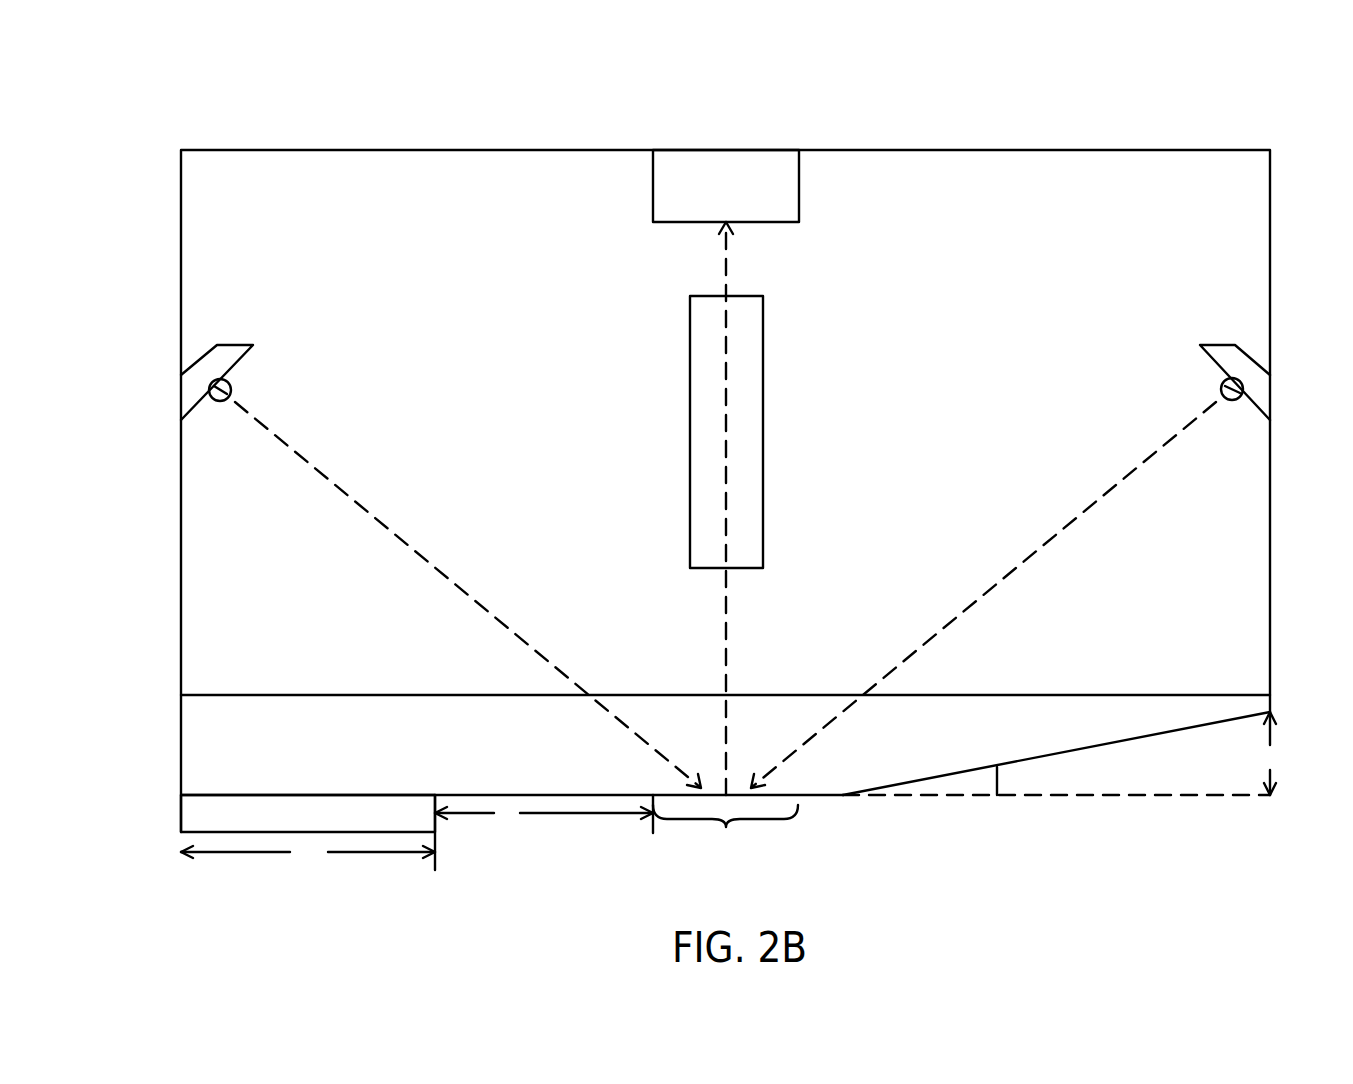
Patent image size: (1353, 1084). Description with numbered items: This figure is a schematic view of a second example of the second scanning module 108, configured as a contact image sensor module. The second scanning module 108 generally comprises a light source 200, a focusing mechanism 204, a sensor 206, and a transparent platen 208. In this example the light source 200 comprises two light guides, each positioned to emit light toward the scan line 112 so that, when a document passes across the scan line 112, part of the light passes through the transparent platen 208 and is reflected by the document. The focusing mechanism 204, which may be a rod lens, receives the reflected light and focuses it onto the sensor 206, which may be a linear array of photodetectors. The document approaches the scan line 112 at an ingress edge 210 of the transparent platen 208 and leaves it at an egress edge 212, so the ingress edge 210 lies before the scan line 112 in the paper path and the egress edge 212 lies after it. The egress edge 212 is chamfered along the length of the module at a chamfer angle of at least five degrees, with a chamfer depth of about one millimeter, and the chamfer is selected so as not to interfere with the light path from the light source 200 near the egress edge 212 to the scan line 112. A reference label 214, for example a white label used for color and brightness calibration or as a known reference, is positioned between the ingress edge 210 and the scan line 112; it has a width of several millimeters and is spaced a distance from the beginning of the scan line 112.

The second scanning module 108 is at (108, 69).
The light source 200 is at (230, 345).
The focusing mechanism 204 is at (763, 402).
The sensor 206 is at (708, 197).
The transparent platen 208 is at (480, 764).
The ingress edge 210 is at (181, 763).
The egress edge 212 is at (1270, 712).
The reference label 214 is at (292, 825).
The scan line 112 is at (725, 832).